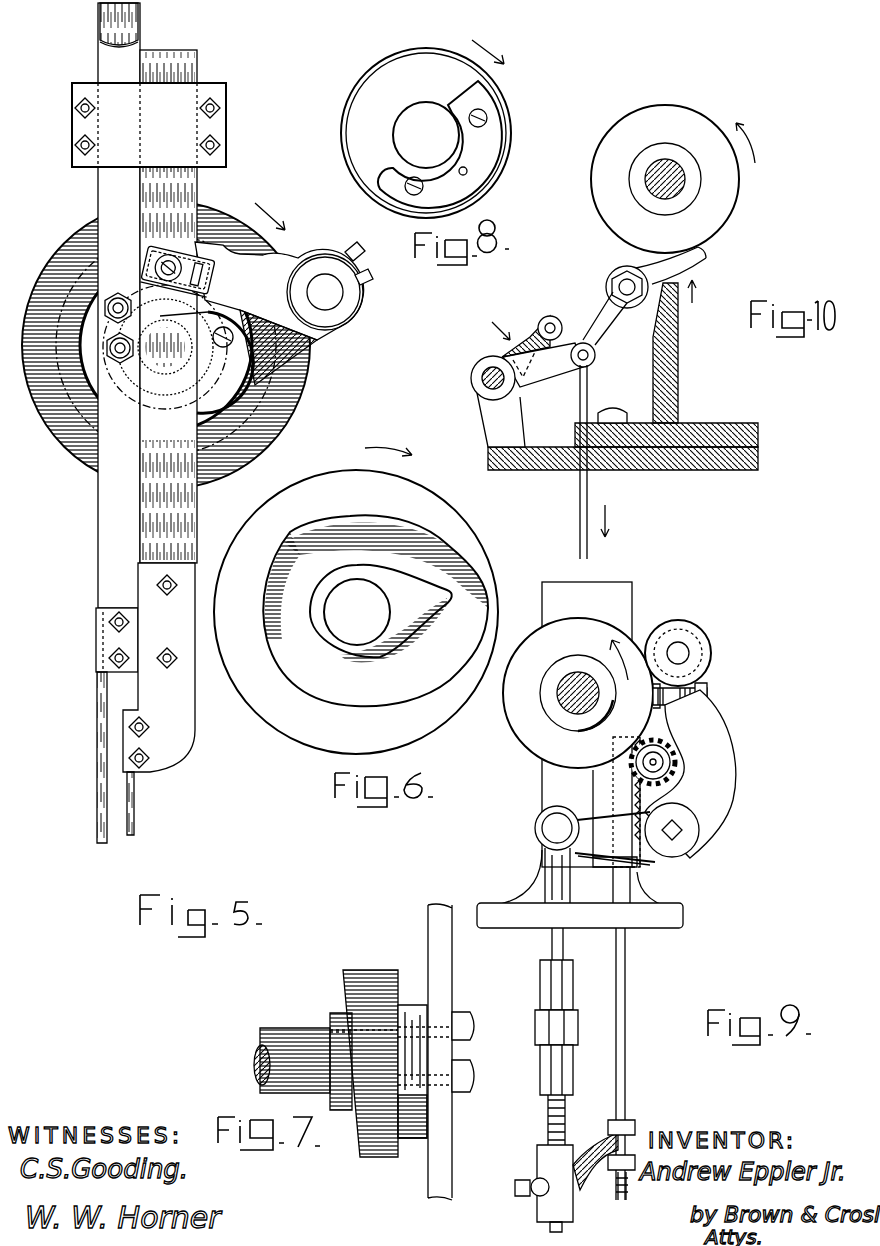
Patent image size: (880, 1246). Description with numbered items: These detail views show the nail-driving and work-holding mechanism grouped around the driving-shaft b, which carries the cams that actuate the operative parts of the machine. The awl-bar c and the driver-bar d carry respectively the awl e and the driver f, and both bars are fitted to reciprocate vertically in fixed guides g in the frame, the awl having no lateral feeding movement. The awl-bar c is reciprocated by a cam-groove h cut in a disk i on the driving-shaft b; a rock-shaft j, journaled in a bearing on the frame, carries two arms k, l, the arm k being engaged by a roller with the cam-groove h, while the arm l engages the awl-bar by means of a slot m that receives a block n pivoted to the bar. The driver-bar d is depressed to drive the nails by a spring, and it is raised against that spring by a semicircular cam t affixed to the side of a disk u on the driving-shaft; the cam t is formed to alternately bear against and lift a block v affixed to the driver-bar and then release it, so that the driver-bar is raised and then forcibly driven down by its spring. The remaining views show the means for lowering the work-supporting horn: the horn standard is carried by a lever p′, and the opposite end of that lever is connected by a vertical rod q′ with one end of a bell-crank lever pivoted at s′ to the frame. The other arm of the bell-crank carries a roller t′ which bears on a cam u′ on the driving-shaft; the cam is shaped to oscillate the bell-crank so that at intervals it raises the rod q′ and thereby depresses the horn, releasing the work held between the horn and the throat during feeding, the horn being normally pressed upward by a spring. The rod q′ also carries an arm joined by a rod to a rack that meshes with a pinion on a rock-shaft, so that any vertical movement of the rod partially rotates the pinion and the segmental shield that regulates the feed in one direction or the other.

In FIG. 5, the fixed guides g is at (149, 125).
In FIG. 5, the driver-bar d is at (118, 337).
In FIG. 7, the driver-bar d is at (455, 982).
In FIG. 5, the awl-bar c is at (186, 512).
In FIG. 7, the awl-bar c is at (303, 1060).
In FIG. 5, the driver f is at (97, 757).
In FIG. 5, the awl e is at (135, 797).
In FIG. 5, the cam-groove h is at (92, 398).
In FIG. 6, the cam-groove h is at (367, 614).
In FIG. 5, the disk u is at (88, 352).
In FIG. 8, the disk u is at (426, 133).
In FIG. 7, the disk u is at (370, 1063).
In FIG. 5, the block v is at (100, 327).
In FIG. 7, the block v is at (415, 1010).
In FIG. 5, the semicircular cam t is at (197, 403).
In FIG. 8, the semicircular cam t is at (440, 144).
In FIG. 7, the semicircular cam t is at (415, 1128).
In FIG. 5, the block n is at (150, 252).
In FIG. 5, the slot m is at (203, 280).
In FIG. 5, the arm l is at (267, 277).
In FIG. 5, the arm k is at (280, 347).
In FIG. 5, the rock-shaft j is at (337, 297).
In FIG. 5, the driving-shaft b is at (235, 346).
In FIG. 9, the driving-shaft b is at (570, 695).
In FIG. 6, the disk i is at (356, 612).
In FIG. 9, the cam u′ is at (630, 642).
In FIG. 9, the roller t′ is at (712, 655).
In FIG. 9, the lever p′ is at (712, 781).
In FIG. 9, the pivot s′ is at (676, 827).
In FIG. 9, the vertical rod q′ is at (548, 1118).